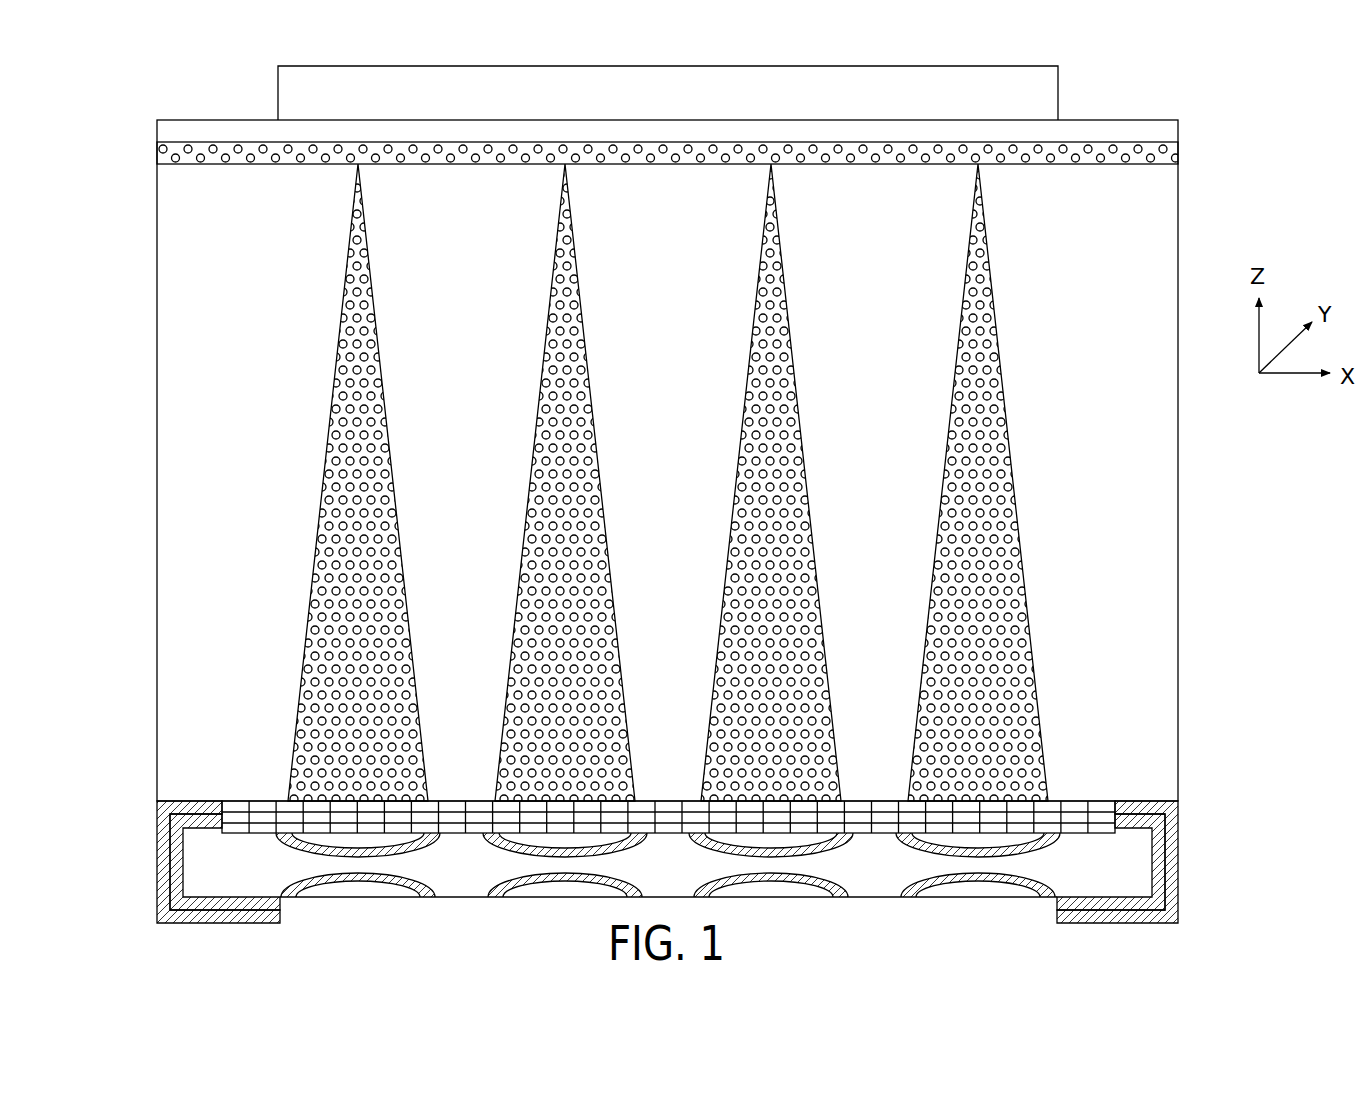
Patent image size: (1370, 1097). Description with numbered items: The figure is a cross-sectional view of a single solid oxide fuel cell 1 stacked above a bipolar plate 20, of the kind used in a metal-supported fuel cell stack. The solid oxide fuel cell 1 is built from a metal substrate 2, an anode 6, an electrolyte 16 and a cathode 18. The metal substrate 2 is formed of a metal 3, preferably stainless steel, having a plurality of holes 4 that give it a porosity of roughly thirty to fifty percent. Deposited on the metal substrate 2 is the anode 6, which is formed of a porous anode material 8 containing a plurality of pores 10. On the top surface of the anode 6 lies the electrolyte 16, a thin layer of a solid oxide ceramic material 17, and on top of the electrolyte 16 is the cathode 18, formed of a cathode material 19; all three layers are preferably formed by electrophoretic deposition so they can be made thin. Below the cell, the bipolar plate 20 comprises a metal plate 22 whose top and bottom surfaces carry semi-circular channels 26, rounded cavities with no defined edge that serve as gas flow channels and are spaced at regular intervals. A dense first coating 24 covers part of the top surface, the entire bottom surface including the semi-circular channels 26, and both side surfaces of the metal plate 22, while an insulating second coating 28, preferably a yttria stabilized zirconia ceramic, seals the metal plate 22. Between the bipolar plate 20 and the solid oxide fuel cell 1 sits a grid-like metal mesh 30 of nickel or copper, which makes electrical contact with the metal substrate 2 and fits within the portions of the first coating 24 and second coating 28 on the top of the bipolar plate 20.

The solid oxide fuel cell 1 is at (204, 90).
The metal substrate 2 is at (1178, 528).
The metal 3 is at (1130, 452).
The holes 4 is at (1023, 591).
The anode 6 is at (1180, 155).
The porous anode material 8 is at (1160, 163).
The pores 10 is at (1180, 150).
The electrolyte 16 is at (1180, 128).
The solid oxide ceramic material 17 is at (1150, 130).
The cathode 18 is at (1058, 102).
The cathode material 19 is at (1022, 83).
The bipolar plate 20 is at (1230, 875).
The metal plate 22 is at (1132, 847).
The first coating 24 is at (260, 902).
The semi-circular channels 26 is at (978, 890).
The second coating 28 is at (157, 885).
The metal mesh 30 is at (247, 801).